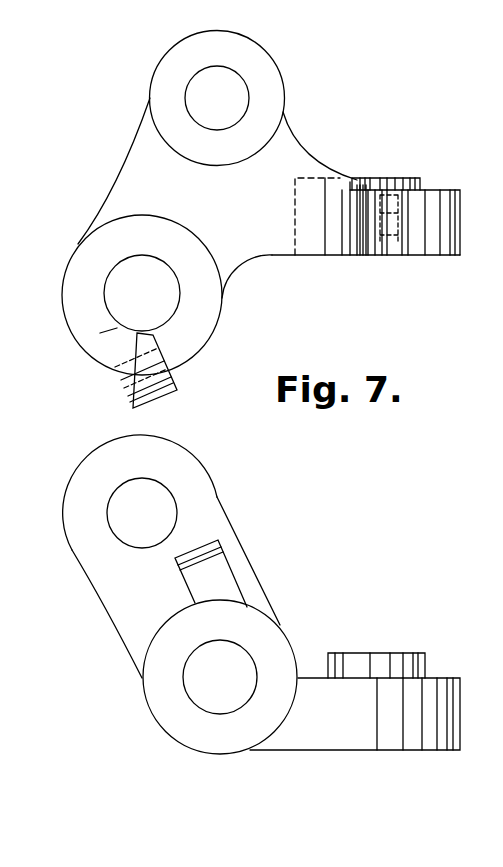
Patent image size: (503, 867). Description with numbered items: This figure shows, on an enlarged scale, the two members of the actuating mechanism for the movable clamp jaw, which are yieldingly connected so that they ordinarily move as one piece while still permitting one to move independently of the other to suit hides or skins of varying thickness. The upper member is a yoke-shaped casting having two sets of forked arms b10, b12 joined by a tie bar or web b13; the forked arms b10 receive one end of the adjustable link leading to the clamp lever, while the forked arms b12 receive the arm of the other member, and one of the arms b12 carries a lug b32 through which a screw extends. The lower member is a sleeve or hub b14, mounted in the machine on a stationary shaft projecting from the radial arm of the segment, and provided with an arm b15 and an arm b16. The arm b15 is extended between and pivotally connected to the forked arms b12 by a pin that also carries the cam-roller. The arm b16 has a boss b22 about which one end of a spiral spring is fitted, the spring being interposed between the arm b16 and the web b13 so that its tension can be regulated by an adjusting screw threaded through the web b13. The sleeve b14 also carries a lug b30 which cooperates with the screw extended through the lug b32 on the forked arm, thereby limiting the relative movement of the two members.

The forked arms b10 is at (158, 93).
The forked arms b12 is at (78, 264).
The tie bar or web b13 is at (433, 248).
The lug b32 is at (130, 380).
The arm b15 is at (103, 577).
The lug b30 is at (220, 576).
The sleeve or hub b14 is at (155, 712).
The arm b16 is at (390, 742).
The boss b22 is at (420, 653).